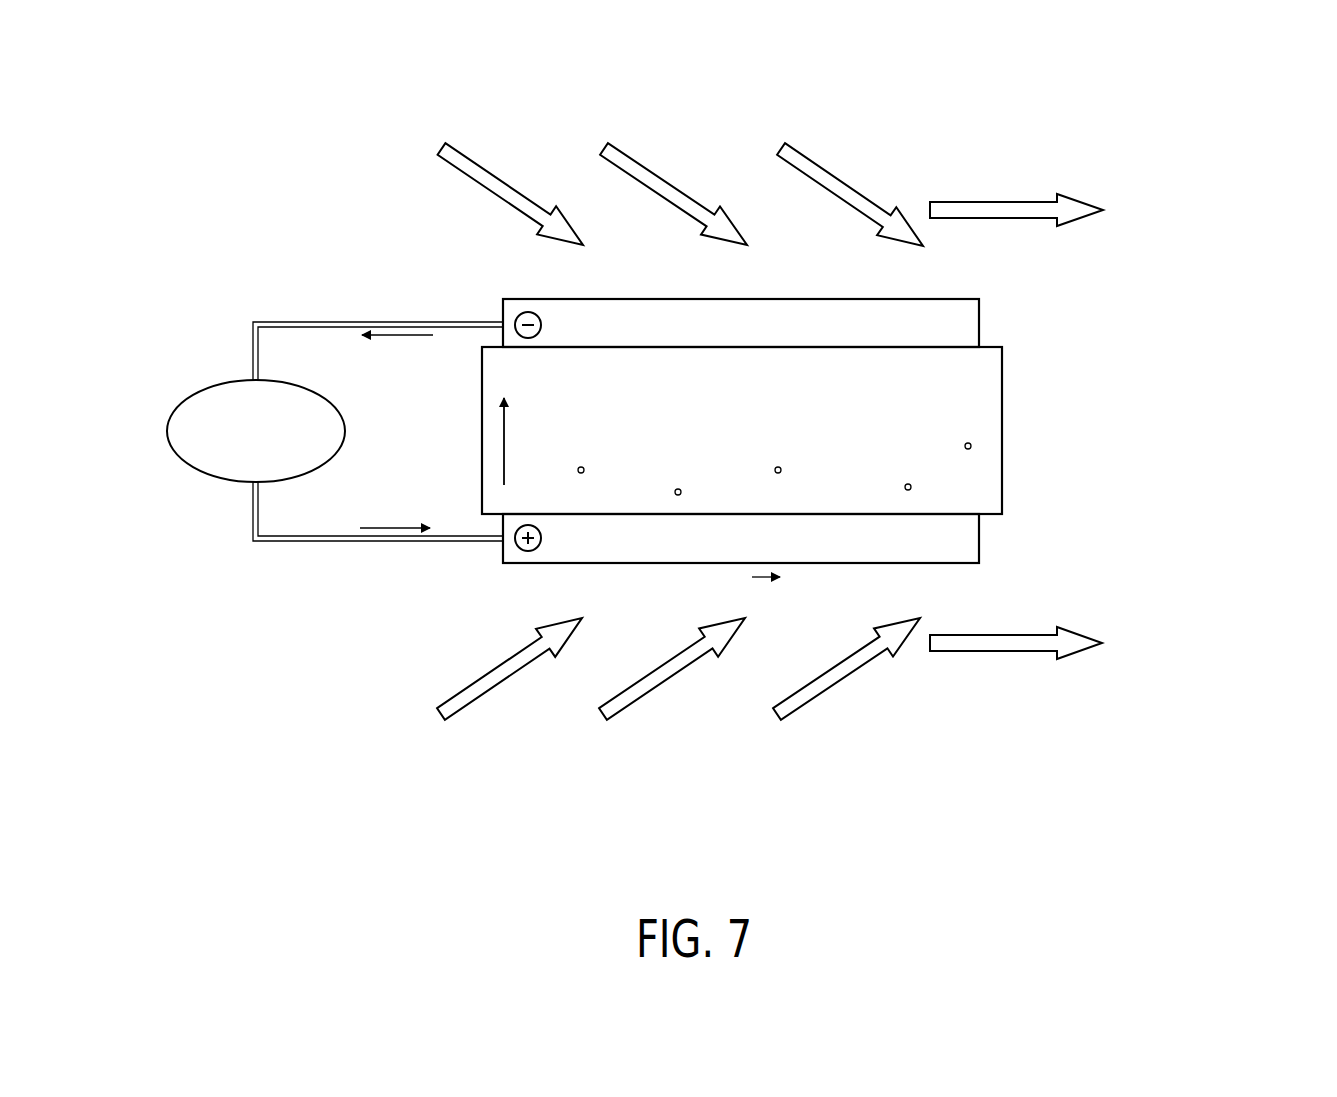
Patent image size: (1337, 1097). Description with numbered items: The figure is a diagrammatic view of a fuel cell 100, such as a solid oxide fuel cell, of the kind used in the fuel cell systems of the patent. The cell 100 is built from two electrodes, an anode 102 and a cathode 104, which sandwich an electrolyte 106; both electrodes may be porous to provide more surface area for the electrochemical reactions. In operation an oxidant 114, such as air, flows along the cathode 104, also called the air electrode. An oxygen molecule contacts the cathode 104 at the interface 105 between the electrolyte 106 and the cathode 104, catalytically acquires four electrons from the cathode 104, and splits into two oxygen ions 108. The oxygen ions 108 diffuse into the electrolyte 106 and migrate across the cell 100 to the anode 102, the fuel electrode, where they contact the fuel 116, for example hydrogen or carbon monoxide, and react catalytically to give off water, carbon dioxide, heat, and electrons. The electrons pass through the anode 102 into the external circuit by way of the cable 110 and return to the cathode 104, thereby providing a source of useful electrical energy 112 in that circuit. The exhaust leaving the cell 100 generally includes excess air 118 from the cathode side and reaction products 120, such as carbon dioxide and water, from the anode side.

The fuel cell 100 is at (353, 113).
The anode 102 is at (980, 330).
The cathode 104 is at (980, 540).
The interface 105 is at (962, 513).
The electrolyte 106 is at (1002, 432).
The oxygen ions 108 is at (676, 490).
The cable 110 is at (348, 318).
The useful electrical energy 112 is at (340, 412).
The oxidant 114 is at (672, 762).
The fuel 116 is at (587, 108).
The excess air 118 is at (1183, 615).
The reaction products 120 is at (1207, 152).